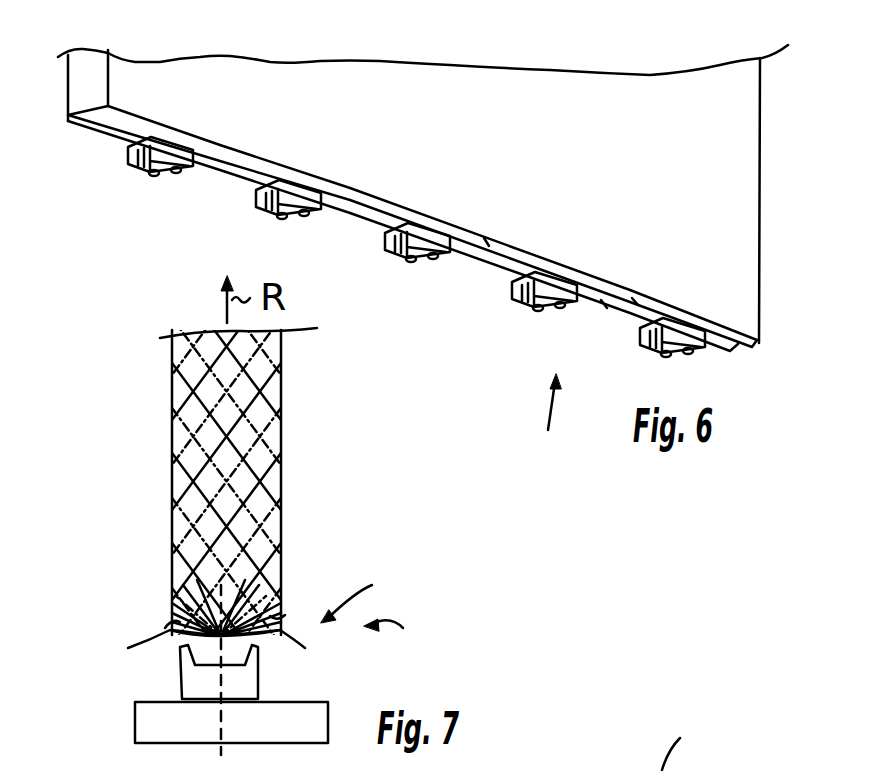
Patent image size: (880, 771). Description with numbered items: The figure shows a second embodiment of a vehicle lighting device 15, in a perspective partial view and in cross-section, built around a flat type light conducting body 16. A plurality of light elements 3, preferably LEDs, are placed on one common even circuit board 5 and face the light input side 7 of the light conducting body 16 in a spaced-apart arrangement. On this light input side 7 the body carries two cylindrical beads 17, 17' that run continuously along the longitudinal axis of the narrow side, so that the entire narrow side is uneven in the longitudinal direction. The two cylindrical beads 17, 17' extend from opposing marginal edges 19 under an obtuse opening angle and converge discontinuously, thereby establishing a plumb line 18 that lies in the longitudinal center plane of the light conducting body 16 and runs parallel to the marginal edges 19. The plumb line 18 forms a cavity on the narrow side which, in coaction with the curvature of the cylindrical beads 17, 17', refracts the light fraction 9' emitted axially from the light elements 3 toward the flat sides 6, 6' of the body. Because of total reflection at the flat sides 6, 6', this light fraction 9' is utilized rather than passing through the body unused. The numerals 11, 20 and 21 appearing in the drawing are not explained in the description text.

In FIG. 6, the light elements 3 is at (403, 263).
In FIG. 7, the light elements 3 is at (257, 685).
In FIG. 7, the circuit board 5 is at (135, 729).
In FIG. 7, the flat side 6 is at (197, 436).
In FIG. 6, the flat side 6' is at (412, 228).
In FIG. 7, the flat side 6' is at (260, 436).
In FIG. 7, the light input side 7 is at (358, 593).
In FIG. 7, the light fraction 9' is at (224, 481).
In FIG. 7, the guide element 11 is at (273, 758).
In FIG. 6, the lighting device 15 is at (558, 425).
In FIG. 7, the lighting device 15 is at (400, 642).
In FIG. 6, the flat type light conducting body 16 is at (500, 97).
In FIG. 7, the flat type light conducting body 16 is at (282, 377).
In FIG. 6, the cylindrical bead 17 is at (587, 340).
In FIG. 7, the cylindrical bead 17 is at (134, 617).
In FIG. 6, the cylindrical bead 17' is at (619, 344).
In FIG. 7, the cylindrical bead 17' is at (308, 583).
In FIG. 7, the plumb line 18 is at (221, 635).
In FIG. 6, the marginal edges 19 is at (487, 241).
In FIG. 7, the marginal edges 19 is at (208, 654).
In FIG. 7, the element 20 is at (688, 736).
In FIG. 7, the element 21 is at (371, 760).